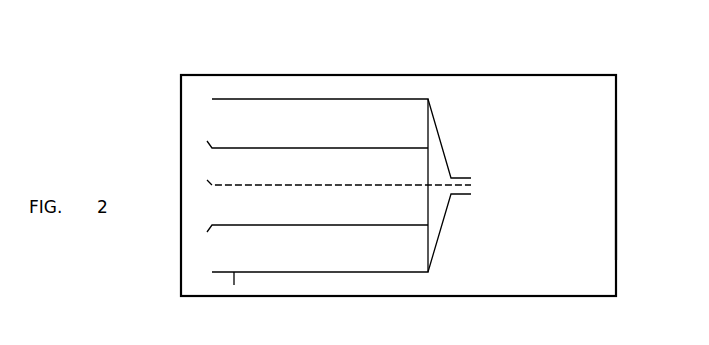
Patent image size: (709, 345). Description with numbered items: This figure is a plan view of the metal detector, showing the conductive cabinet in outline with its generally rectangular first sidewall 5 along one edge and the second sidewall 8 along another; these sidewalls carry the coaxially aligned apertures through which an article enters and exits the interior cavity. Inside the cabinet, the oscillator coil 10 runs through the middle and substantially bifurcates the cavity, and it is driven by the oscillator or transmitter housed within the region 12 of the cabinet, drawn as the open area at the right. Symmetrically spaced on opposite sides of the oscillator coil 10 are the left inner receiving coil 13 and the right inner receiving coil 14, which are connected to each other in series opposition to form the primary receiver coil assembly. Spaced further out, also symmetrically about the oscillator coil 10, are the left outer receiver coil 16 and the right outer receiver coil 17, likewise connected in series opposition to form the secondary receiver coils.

The second sidewall 8 is at (539, 75).
The first sidewall 5 is at (521, 296).
The region 12 is at (565, 179).
The right outer receiver coil 17 is at (390, 99).
The right inner receiving coil 14 is at (201, 133).
The oscillator coil 10 is at (193, 172).
The left inner receiving coil 13 is at (197, 241).
The left outer receiver coil 16 is at (236, 297).